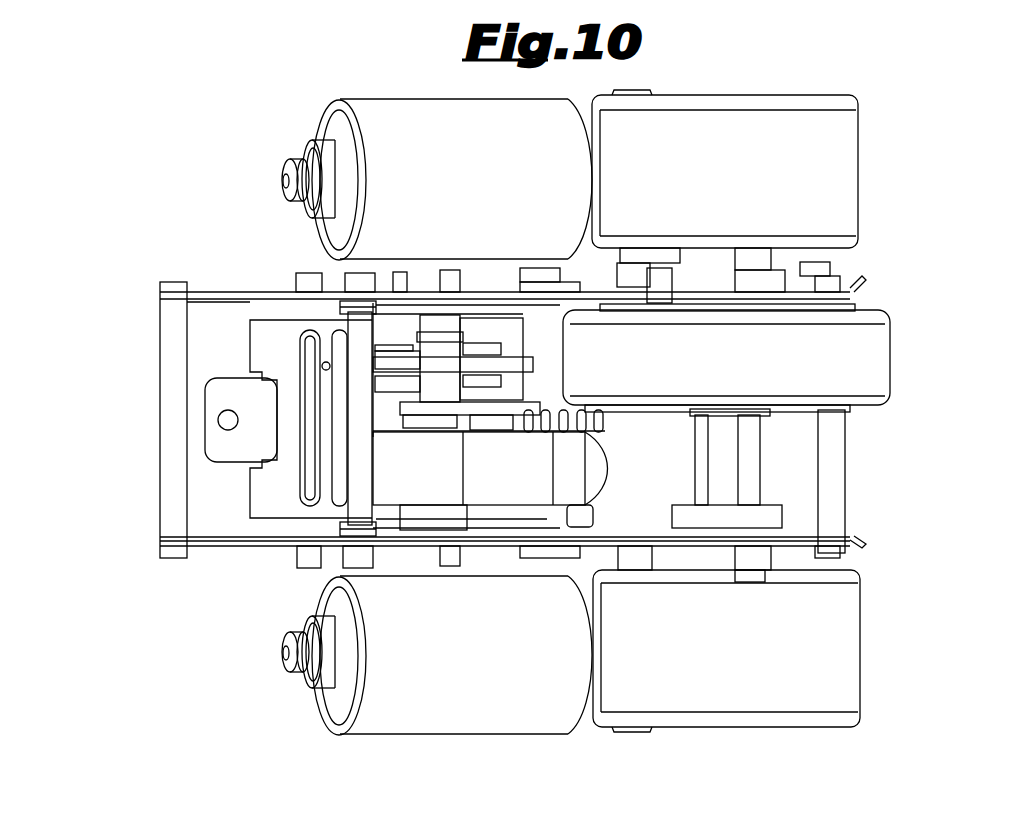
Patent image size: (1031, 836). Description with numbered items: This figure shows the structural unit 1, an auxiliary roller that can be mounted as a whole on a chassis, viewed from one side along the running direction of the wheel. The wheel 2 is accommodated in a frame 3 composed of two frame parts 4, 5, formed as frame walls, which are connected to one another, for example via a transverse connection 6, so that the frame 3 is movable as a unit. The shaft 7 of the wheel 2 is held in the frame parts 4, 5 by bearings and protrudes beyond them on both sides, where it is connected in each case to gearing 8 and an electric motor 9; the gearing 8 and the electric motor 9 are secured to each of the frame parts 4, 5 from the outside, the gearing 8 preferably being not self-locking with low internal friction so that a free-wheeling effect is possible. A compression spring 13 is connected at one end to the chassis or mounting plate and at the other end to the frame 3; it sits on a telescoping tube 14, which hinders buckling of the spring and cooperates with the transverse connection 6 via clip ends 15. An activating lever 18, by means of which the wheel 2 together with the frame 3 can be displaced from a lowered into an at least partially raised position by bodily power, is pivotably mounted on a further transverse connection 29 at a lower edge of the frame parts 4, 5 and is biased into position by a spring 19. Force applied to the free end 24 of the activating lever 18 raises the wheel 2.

The structural unit 1 is at (837, 72).
The wheel 2 is at (873, 373).
The frame 3 is at (885, 587).
The frame part 4 is at (751, 535).
The frame part 5 is at (812, 283).
The transverse connection 6 is at (655, 300).
The shaft 7 is at (820, 437).
The gearing 8 is at (828, 164).
The electric motor 9 is at (372, 105).
The compression spring 13 is at (568, 427).
The telescoping tube 14 is at (543, 427).
The clip ends 15 is at (660, 423).
The activating lever 18 is at (216, 292).
The spring 19 is at (340, 305).
The free end 24 is at (138, 428).
The further transverse connection 29 is at (355, 485).